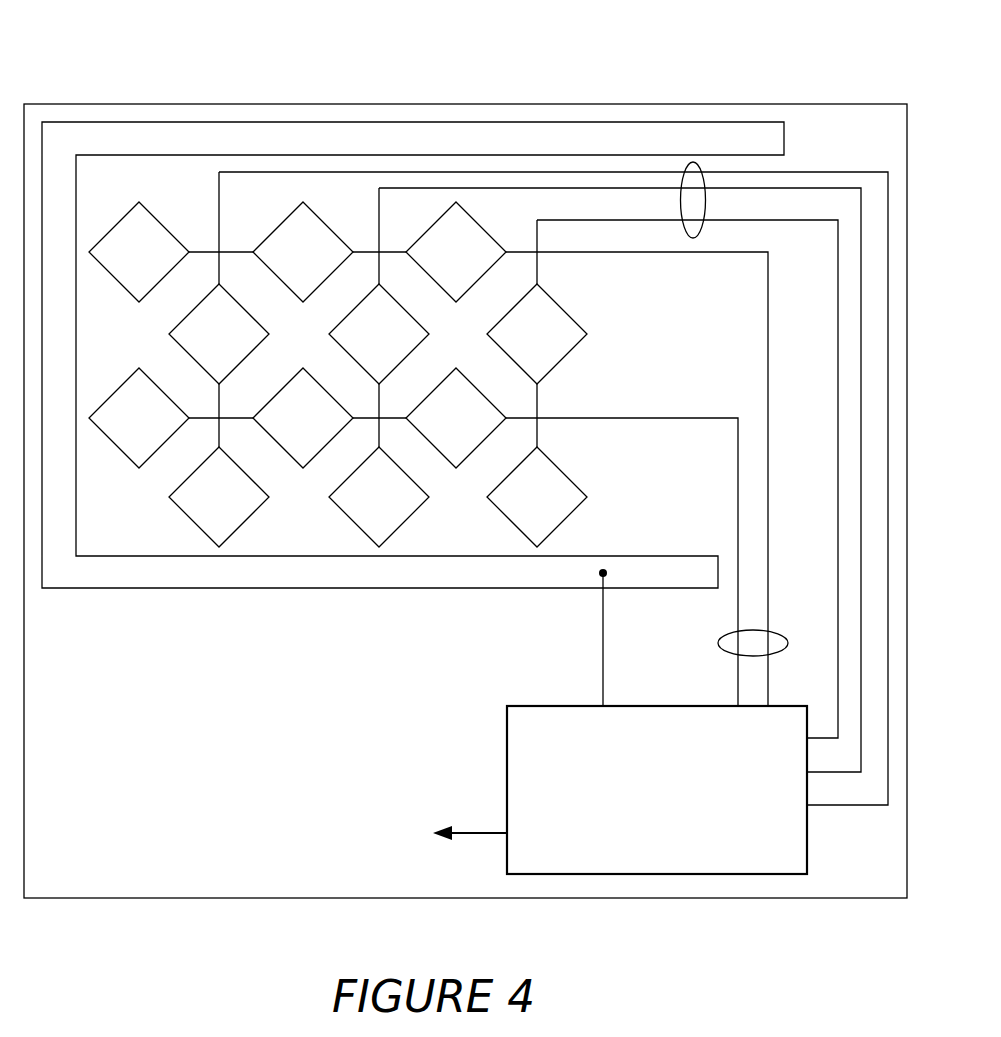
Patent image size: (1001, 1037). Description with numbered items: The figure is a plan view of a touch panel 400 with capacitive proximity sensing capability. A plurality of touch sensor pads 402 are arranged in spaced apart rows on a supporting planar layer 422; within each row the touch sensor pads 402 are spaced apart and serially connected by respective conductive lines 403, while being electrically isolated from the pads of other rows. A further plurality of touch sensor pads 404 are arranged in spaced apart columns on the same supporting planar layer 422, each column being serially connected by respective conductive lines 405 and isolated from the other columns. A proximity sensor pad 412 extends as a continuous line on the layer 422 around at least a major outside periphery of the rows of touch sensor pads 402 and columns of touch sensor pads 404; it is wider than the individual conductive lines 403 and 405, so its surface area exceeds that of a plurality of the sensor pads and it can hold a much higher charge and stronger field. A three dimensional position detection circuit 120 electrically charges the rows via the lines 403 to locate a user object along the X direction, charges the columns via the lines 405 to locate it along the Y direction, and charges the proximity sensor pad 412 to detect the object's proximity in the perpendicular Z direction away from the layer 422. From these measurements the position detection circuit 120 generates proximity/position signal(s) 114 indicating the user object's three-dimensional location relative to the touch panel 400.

The touch panel 400 is at (403, 47).
The supporting planar layer 422 is at (853, 113).
The proximity sensor pad 412 is at (411, 589).
The touch sensor pads 402 is at (428, 454).
The touch sensor pads 404 is at (378, 359).
The conductive lines 405 is at (702, 226).
The conductive lines 403 is at (723, 649).
The position detection circuit 120 is at (760, 813).
The proximity/position signal(s) 114 is at (487, 833).